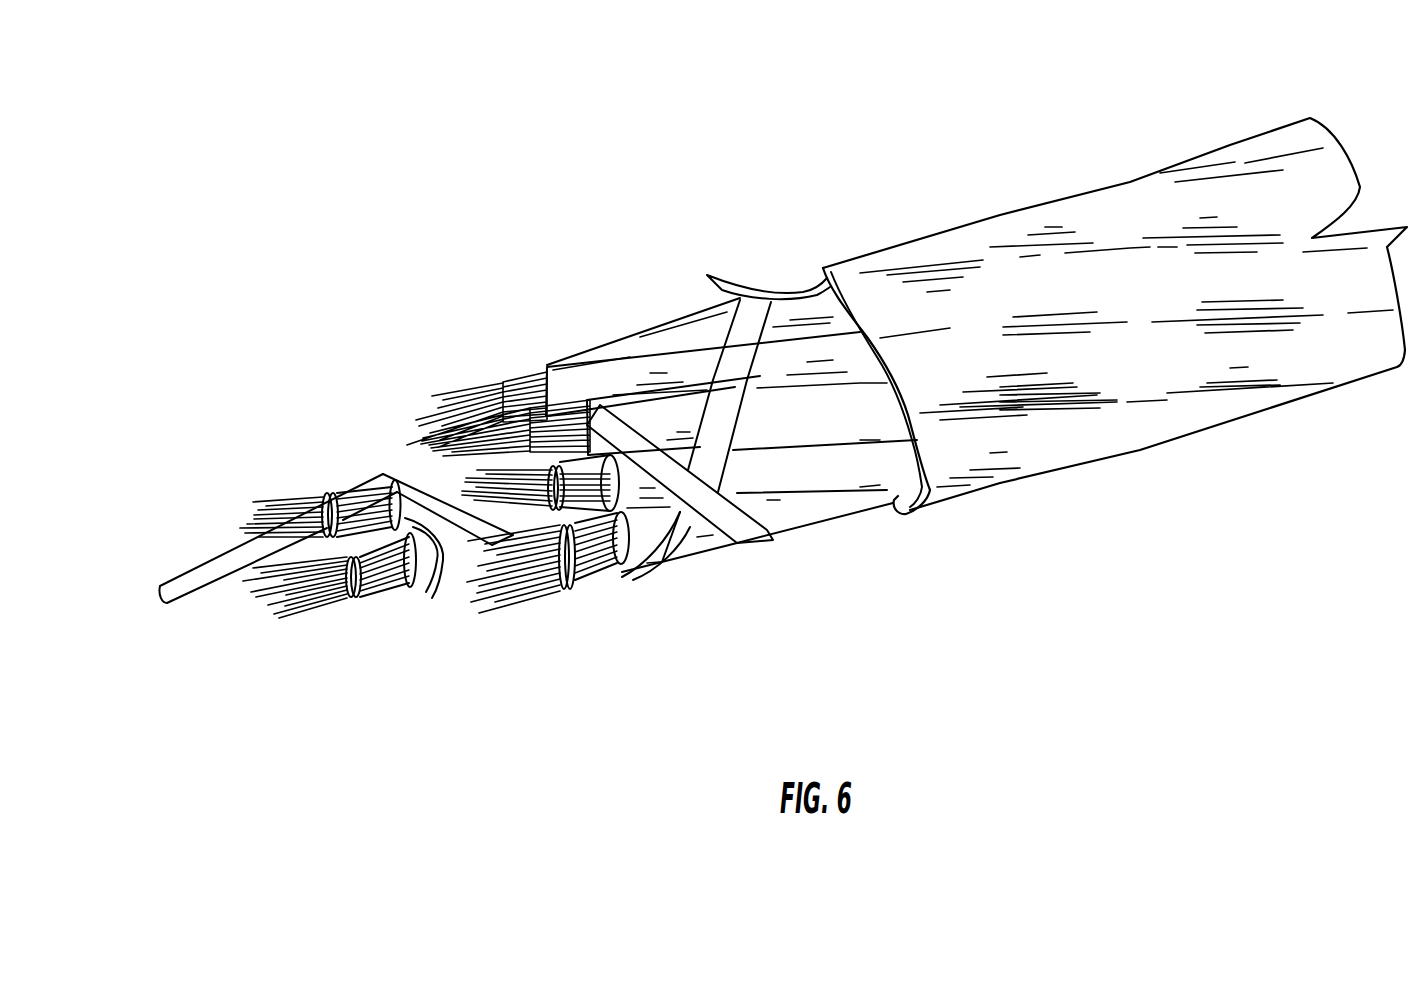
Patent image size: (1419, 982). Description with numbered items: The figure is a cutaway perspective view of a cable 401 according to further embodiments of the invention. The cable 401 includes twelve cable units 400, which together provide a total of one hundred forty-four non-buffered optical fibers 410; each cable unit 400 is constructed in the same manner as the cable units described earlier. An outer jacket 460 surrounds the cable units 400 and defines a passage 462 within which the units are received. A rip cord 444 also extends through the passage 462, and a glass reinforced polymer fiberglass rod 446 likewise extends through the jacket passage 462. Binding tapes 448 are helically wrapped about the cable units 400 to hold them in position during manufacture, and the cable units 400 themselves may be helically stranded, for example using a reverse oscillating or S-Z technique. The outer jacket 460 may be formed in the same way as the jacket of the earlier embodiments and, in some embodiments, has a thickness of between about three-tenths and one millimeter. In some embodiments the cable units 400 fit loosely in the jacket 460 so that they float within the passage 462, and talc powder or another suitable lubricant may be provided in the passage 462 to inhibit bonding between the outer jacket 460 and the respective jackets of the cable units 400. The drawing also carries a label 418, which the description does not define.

The cable 401 is at (705, 140).
The outer jacket 460 is at (982, 237).
The passage 462 is at (849, 312).
The rip cord 444 is at (808, 283).
The cable units 400 is at (537, 413).
The non-buffered optical fibers 410 is at (435, 403).
The binding tapes 448 is at (447, 582).
The folded strip 418 is at (383, 474).
The glass reinforced polymer (GRP) fiberglass rod 446 is at (192, 584).